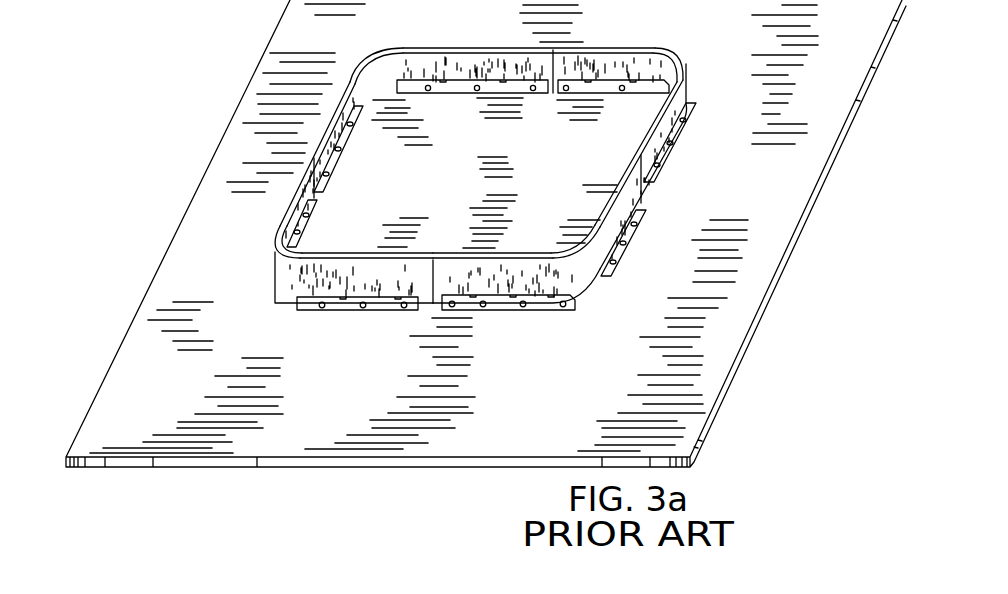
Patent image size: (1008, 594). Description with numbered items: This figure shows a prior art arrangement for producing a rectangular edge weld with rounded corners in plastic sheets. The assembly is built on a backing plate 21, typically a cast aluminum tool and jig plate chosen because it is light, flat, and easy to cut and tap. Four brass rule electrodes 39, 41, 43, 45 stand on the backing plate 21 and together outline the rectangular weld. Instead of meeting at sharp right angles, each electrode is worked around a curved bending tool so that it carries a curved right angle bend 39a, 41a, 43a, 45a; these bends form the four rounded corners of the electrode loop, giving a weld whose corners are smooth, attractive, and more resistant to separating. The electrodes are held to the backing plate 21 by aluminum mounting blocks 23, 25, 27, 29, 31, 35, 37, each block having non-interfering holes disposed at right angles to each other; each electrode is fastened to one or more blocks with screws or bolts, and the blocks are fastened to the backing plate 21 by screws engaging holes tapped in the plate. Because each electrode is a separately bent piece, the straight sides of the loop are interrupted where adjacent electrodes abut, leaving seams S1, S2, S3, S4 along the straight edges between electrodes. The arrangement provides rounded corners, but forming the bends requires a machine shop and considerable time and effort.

The backing plate 21 is at (565, 422).
The mounting block 23 is at (355, 308).
The mounting block 25 is at (503, 306).
The mounting block 27 is at (620, 255).
The mounting block 29 is at (682, 138).
The mounting block 31 is at (590, 90).
The mounting block 35 is at (497, 88).
The mounting block 37 is at (303, 230).
The rule electrode 39 is at (292, 288).
The curved right angle bend 39a is at (280, 257).
The rule electrode 41 is at (573, 298).
The curved right angle bend 41a is at (583, 263).
The rule electrode 43 is at (684, 88).
The curved right angle bend 43a is at (680, 53).
The rule electrode 45 is at (366, 80).
The curved right angle bend 45a is at (382, 47).
The seam S1 is at (435, 261).
The seam S2 is at (641, 188).
The seam S3 is at (557, 52).
The seam S4 is at (316, 192).